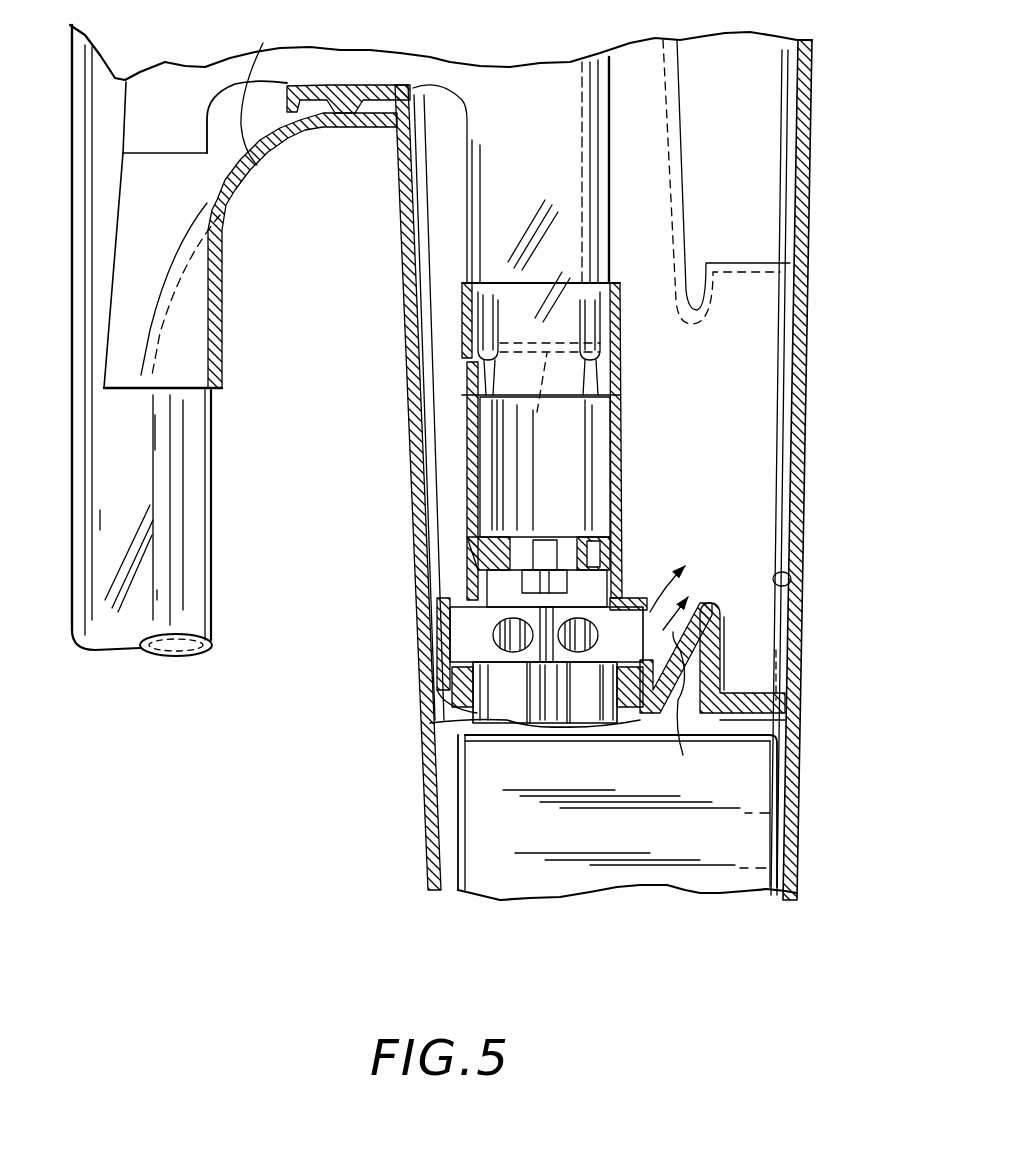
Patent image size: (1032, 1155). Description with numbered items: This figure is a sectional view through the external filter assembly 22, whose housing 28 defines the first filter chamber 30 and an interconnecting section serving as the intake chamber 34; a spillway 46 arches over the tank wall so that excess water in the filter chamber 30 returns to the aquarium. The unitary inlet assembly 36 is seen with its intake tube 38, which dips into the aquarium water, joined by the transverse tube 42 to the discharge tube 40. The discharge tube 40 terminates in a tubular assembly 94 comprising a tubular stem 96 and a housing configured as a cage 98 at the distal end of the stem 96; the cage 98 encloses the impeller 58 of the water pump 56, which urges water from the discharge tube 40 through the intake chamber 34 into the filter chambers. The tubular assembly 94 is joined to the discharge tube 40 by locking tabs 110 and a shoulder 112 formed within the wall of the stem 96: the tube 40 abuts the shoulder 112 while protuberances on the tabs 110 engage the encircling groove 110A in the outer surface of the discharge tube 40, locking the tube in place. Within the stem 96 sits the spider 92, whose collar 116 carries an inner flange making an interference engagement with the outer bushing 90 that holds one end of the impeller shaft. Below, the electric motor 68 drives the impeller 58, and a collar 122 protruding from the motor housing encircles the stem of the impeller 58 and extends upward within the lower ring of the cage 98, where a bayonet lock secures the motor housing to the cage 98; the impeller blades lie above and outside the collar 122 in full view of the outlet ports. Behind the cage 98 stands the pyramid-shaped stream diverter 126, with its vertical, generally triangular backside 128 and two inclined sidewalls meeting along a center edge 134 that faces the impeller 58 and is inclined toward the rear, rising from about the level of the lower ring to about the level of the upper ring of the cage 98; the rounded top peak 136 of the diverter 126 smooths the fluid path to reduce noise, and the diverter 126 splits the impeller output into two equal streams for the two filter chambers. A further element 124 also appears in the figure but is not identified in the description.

The external filter assembly 22 is at (818, 104).
The housing 28 is at (815, 480).
The first filter chamber 30 is at (757, 259).
The intake chamber 34 is at (791, 580).
The unitary inlet assembly 36 is at (218, 448).
The intake tube 38 is at (213, 549).
The discharge tube 40 is at (612, 234).
The transverse tube 42 is at (397, 133).
The spillway 46 is at (244, 92).
The water pump 56 is at (512, 697).
The impeller 58 is at (618, 610).
The electric motor 68 is at (643, 877).
The outer bushing 90 is at (550, 538).
The spider 92 is at (508, 534).
The tubular assembly 94 is at (628, 438).
The tubular stem 96 is at (470, 478).
The cage 98 is at (445, 603).
The locking tabs 110 is at (463, 340).
The encircling groove 110A is at (550, 397).
The shoulder 112 is at (465, 378).
The collar 116 is at (612, 598).
The collar 122 is at (470, 641).
The right mount 124 is at (460, 712).
The stream diverter 126 is at (726, 636).
The backside 128 is at (724, 670).
The center edge 134 is at (703, 706).
The top peak 136 is at (708, 603).